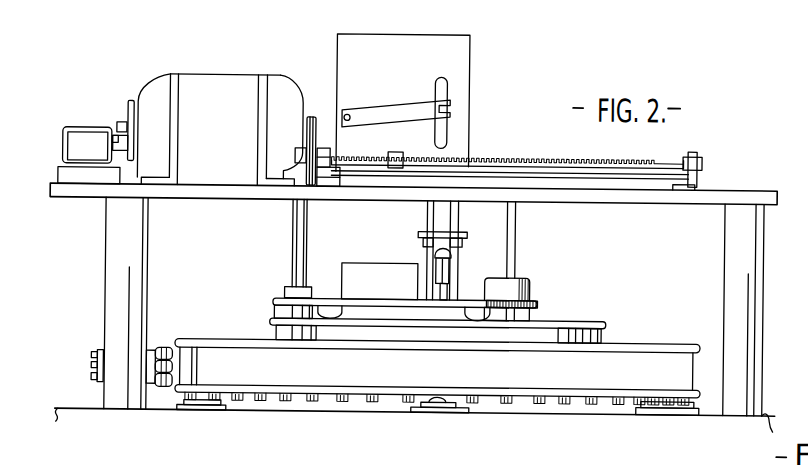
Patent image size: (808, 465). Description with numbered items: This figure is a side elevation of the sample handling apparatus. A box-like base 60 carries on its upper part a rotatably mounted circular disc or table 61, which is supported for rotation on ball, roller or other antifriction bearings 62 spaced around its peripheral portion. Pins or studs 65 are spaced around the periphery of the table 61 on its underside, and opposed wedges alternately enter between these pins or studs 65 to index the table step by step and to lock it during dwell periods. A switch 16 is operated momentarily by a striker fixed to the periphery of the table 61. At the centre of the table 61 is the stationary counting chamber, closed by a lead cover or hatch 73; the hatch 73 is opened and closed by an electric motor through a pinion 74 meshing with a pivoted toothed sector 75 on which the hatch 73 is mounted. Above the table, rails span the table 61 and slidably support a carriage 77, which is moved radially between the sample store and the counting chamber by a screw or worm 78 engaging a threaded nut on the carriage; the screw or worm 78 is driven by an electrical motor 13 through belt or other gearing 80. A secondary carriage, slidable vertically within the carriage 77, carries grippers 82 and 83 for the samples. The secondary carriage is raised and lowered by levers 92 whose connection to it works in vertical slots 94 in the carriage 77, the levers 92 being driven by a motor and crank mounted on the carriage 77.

The electrical motor 13 is at (213, 126).
The switch 16 is at (152, 384).
The box-like base 60 is at (764, 413).
The circular disc or table 61 is at (660, 349).
The antifriction bearings 62 is at (442, 405).
The pins or studs 65 is at (343, 402).
The lead cover or hatch 73 is at (373, 267).
The pinion 74 is at (538, 306).
The pivoted toothed sector 75 is at (277, 304).
The carriage 77 is at (403, 103).
The screw or worm 78 is at (519, 157).
The belt or other gearing 80 is at (325, 101).
The gripper 82 is at (462, 258).
The gripper 83 is at (425, 257).
The levers 92 is at (359, 118).
The vertical slots 94 is at (436, 91).